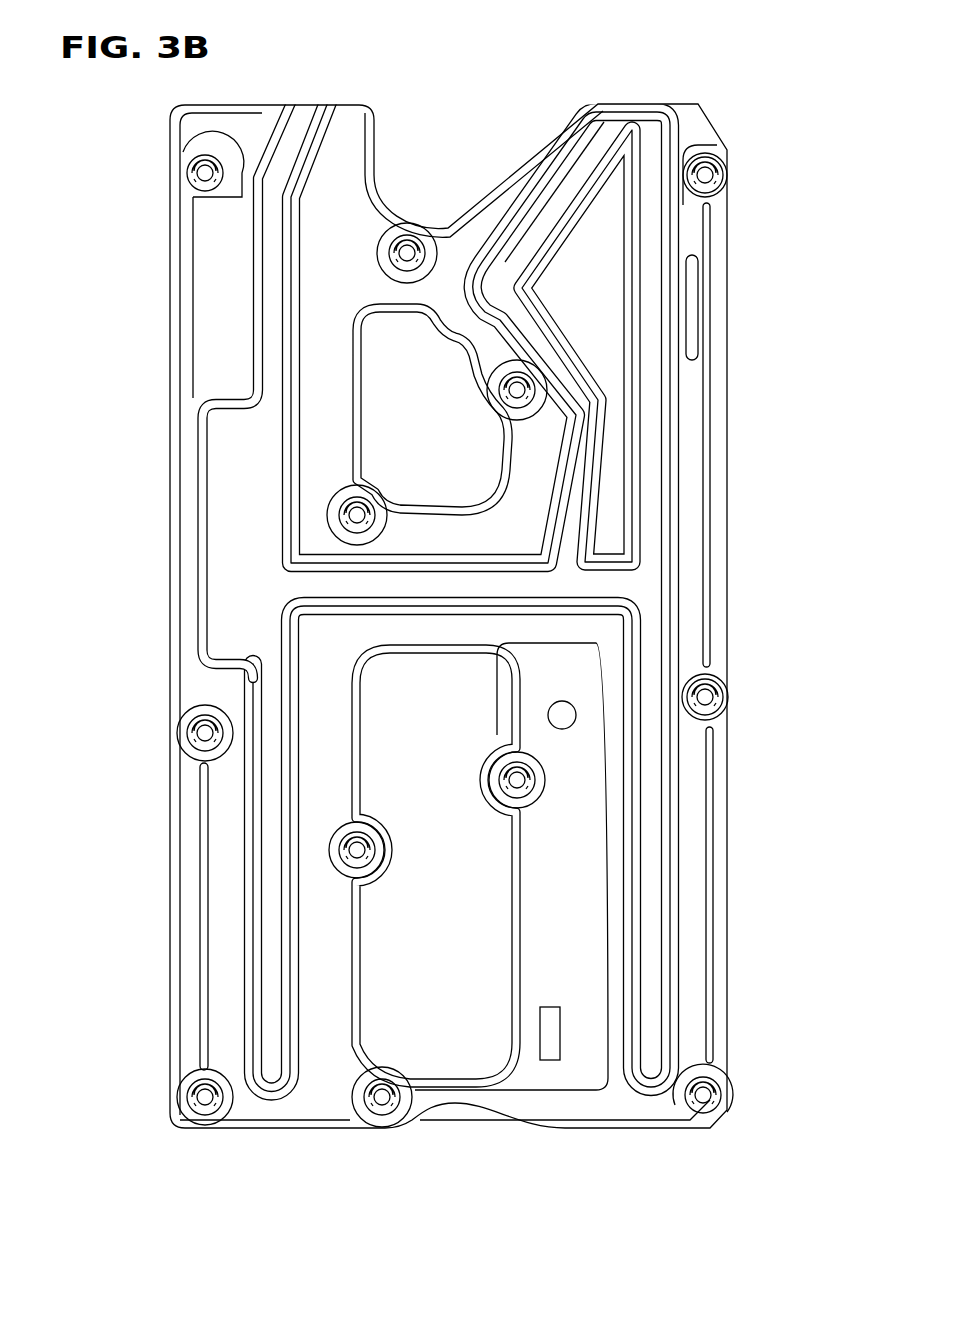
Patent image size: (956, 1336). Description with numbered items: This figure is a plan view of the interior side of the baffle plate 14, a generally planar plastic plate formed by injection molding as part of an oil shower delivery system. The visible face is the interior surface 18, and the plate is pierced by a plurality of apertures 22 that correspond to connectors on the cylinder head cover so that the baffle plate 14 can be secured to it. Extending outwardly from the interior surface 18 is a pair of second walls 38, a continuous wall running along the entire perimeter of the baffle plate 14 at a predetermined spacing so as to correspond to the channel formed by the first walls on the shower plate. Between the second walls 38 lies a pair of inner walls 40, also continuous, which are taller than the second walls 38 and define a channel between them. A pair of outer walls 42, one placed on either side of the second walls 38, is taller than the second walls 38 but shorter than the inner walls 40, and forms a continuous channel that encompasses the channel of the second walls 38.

The baffle plate 14 is at (100, 225).
The interior surface 18 is at (323, 246).
The apertures 22 is at (190, 178).
The second walls 38 is at (302, 110).
The inner walls 40 is at (550, 190).
The outer walls 42 is at (605, 115).